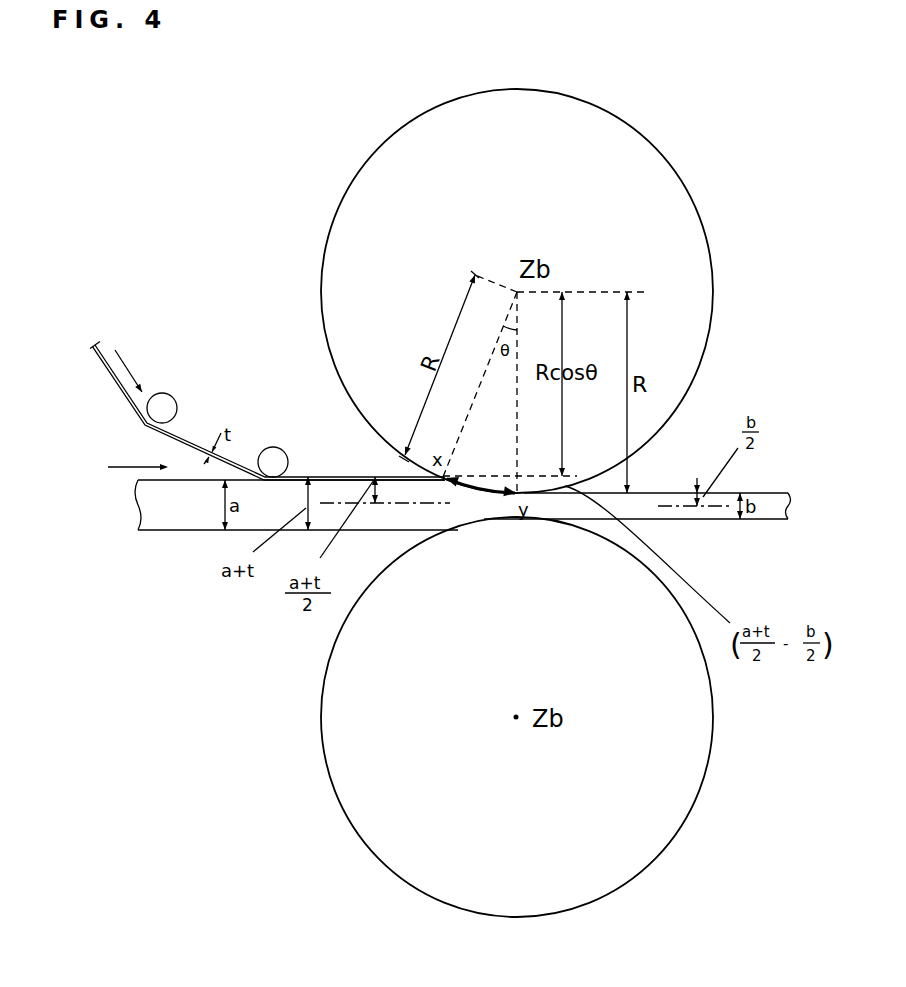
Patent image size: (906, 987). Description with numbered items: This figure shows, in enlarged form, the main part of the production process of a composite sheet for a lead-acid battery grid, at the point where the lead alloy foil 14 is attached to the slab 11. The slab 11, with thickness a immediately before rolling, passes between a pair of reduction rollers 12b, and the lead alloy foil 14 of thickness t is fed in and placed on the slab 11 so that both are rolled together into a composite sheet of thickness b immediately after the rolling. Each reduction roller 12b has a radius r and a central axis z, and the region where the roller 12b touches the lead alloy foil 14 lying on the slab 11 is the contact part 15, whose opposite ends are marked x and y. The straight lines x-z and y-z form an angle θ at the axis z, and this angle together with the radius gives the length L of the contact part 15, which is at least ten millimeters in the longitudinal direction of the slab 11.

The slab 11 is at (193, 530).
The reduction roller 12b is at (670, 165).
The lead alloy foil 14 is at (185, 437).
The contact part 15 is at (483, 497).